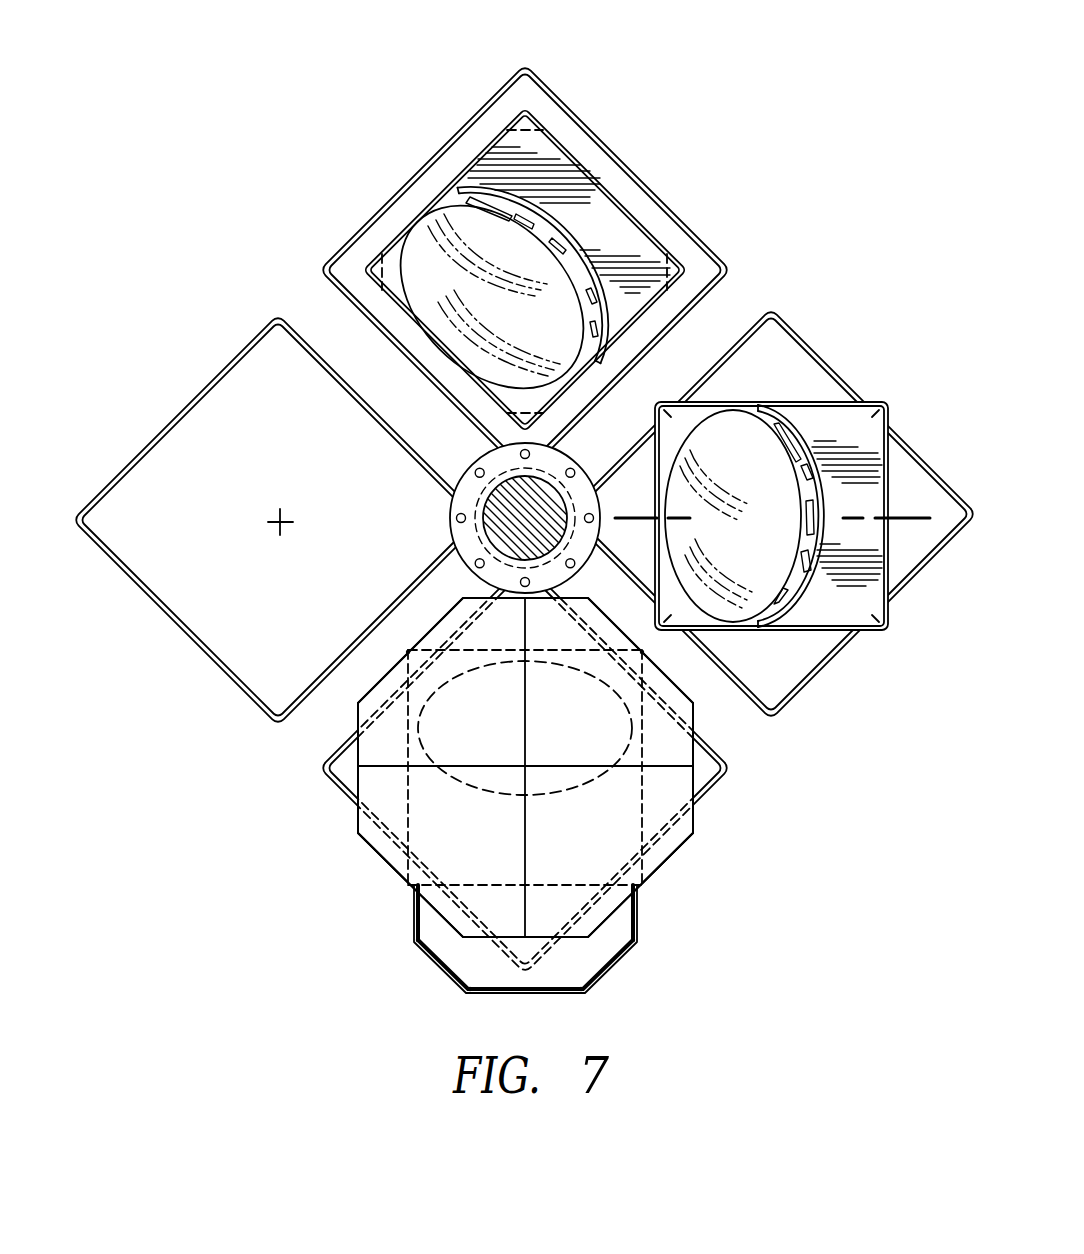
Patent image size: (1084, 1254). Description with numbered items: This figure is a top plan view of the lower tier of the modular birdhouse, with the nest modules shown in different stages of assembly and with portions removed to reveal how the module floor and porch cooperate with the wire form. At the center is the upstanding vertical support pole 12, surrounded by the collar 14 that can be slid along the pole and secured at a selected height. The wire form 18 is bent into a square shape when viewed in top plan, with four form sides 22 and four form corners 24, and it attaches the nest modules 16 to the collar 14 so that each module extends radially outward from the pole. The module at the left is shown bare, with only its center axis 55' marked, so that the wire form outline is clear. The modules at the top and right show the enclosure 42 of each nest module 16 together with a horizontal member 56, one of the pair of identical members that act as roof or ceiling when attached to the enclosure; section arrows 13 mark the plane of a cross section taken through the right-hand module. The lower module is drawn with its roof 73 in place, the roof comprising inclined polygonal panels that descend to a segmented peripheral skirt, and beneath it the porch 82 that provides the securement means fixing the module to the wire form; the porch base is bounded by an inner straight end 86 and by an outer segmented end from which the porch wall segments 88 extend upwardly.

The support pole 12 is at (478, 530).
The section line 13 is at (625, 496).
The collar 14 is at (452, 512).
The nest module 16 is at (668, 856).
The wire form 18 is at (205, 383).
The form side 22 is at (935, 554).
The form corner 24 is at (524, 63).
The enclosure 42 is at (626, 437).
The horizontal member 56 is at (452, 178).
The center axis 55' is at (243, 519).
The roof 73 is at (380, 860).
The porch 82 is at (624, 958).
The inner straight end 86 is at (490, 884).
The porch wall segment 88 is at (427, 960).